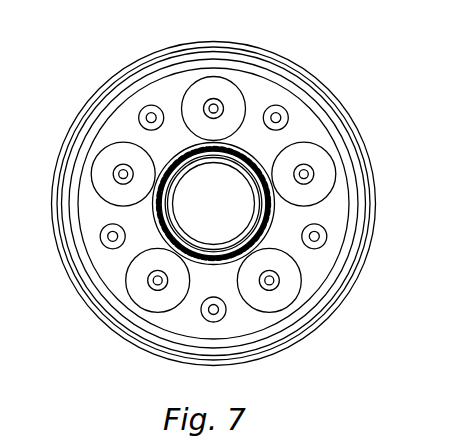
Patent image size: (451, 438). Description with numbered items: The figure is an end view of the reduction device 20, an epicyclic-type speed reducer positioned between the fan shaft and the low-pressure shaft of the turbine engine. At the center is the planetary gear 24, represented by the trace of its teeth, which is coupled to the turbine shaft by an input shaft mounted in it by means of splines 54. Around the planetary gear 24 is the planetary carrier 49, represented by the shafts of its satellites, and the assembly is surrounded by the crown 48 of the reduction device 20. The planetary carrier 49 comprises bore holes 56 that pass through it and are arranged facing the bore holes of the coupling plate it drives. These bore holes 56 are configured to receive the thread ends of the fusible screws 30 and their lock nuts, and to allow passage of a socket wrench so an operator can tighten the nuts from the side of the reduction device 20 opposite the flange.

The reduction device 20 is at (98, 60).
The planetary gear 24 is at (252, 235).
The fusible screws 30 is at (278, 116).
The crown 48 is at (377, 170).
The planetary carrier 49 is at (253, 102).
The splines 54 is at (180, 213).
The bore holes 56 is at (286, 127).